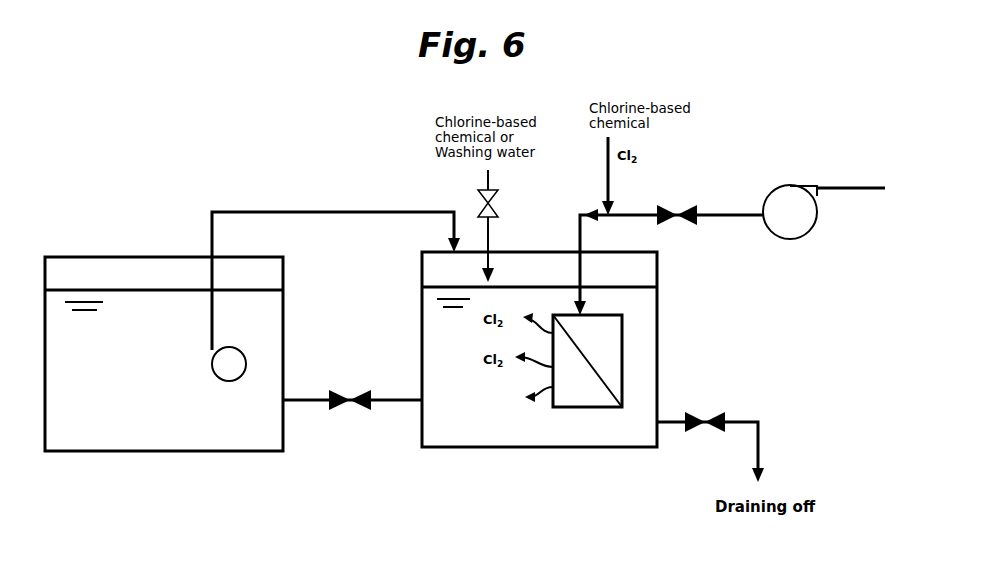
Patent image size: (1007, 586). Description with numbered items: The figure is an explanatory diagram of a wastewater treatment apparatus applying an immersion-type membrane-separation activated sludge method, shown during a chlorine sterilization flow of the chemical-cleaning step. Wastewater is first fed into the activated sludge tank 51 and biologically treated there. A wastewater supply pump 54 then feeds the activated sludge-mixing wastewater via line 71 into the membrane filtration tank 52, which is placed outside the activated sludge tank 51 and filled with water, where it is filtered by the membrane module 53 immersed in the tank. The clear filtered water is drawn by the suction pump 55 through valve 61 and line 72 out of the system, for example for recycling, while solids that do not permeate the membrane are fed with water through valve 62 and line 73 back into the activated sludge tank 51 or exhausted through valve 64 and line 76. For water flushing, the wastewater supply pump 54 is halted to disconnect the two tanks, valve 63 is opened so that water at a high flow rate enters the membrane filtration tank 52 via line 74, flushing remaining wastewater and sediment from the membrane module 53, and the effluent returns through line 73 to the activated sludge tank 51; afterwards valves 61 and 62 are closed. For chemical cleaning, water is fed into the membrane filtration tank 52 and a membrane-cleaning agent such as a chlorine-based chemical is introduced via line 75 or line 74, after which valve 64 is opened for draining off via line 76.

The activated sludge tank 51 is at (138, 451).
The membrane filtration tank 52 is at (510, 447).
The membrane module 53 is at (593, 407).
The wastewater supply pump 54 is at (244, 357).
The suction pump 55 is at (782, 239).
The valve 61 is at (678, 205).
The valve 62 is at (345, 410).
The valve 63 is at (485, 203).
The valve 64 is at (703, 412).
The line 71 is at (342, 212).
The line 72 is at (730, 215).
The line 73 is at (398, 405).
The line 74 is at (488, 242).
The line 75 is at (608, 182).
The line 76 is at (748, 410).